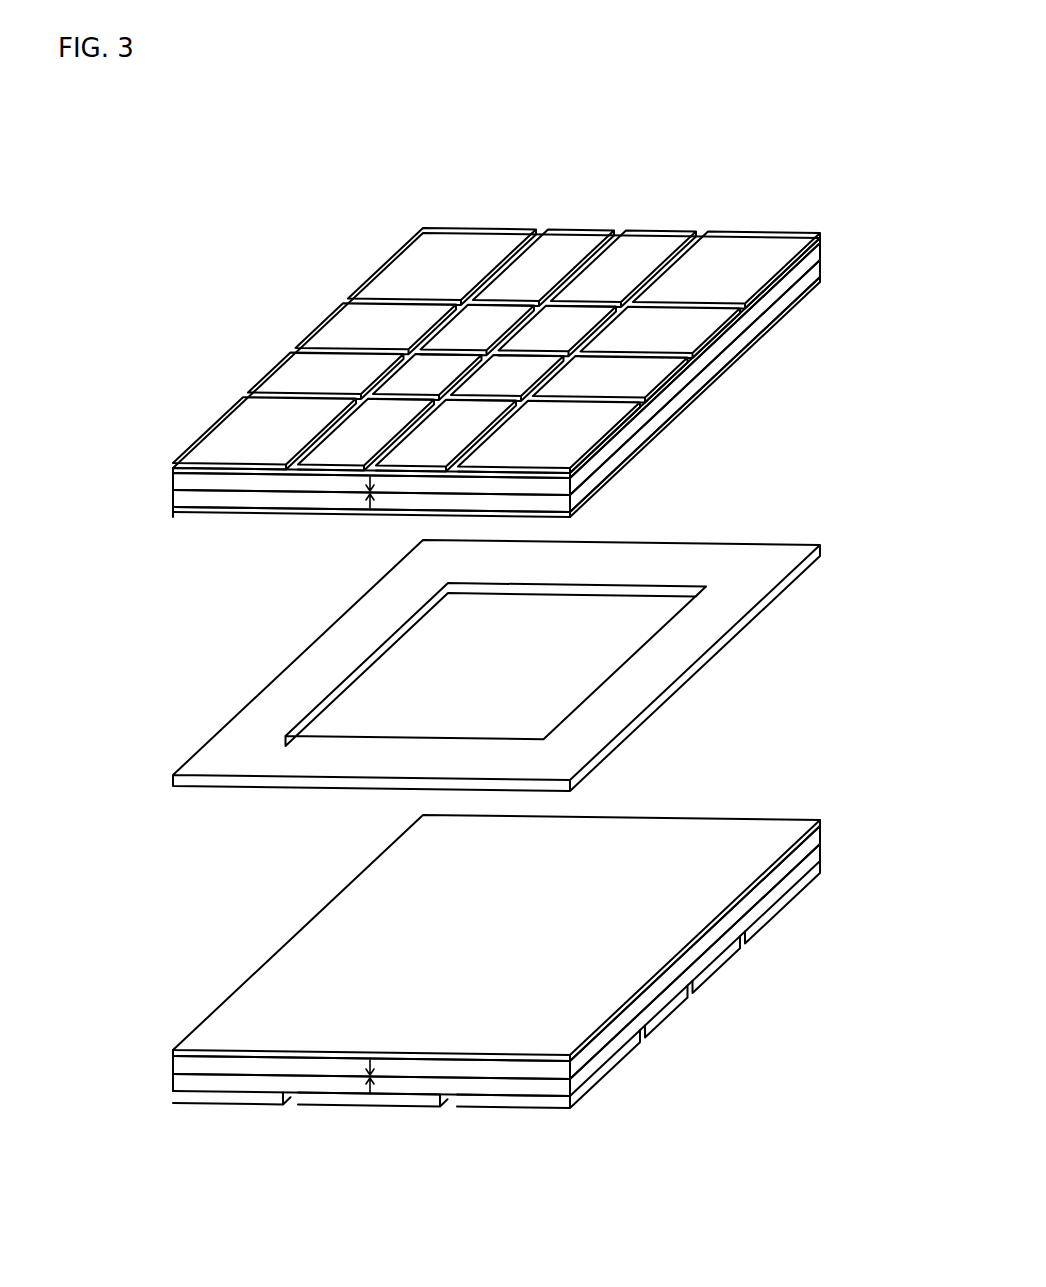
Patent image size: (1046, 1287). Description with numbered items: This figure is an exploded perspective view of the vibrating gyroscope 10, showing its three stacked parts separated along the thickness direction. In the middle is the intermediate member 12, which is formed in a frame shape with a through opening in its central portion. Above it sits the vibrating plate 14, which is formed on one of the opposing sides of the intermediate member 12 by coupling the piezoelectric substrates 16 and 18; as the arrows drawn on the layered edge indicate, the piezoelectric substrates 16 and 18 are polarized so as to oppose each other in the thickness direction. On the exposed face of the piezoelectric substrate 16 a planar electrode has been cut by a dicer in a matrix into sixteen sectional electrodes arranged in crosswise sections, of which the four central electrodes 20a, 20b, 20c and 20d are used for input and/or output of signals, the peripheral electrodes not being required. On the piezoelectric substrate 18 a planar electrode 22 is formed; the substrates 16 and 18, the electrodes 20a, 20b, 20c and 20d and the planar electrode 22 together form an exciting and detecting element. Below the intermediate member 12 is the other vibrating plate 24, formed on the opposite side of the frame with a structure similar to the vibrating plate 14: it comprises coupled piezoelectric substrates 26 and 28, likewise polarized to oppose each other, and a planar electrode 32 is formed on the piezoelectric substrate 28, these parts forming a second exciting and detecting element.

The vibrating gyroscope 10 is at (241, 138).
The intermediate member 12 is at (650, 680).
The vibrating plate 14 is at (693, 437).
The piezoelectric substrate 16 is at (615, 440).
The piezoelectric substrate 18 is at (603, 468).
The electrode 20a is at (494, 322).
The electrode 20b is at (574, 322).
The electrode 20c is at (415, 375).
The electrode 20d is at (523, 372).
The planar electrode 22 is at (218, 512).
The vibrating plate 24 is at (701, 1067).
The piezoelectric substrate 26 is at (602, 1058).
The piezoelectric substrate 28 is at (612, 1033).
The planar electrode 32 is at (328, 913).